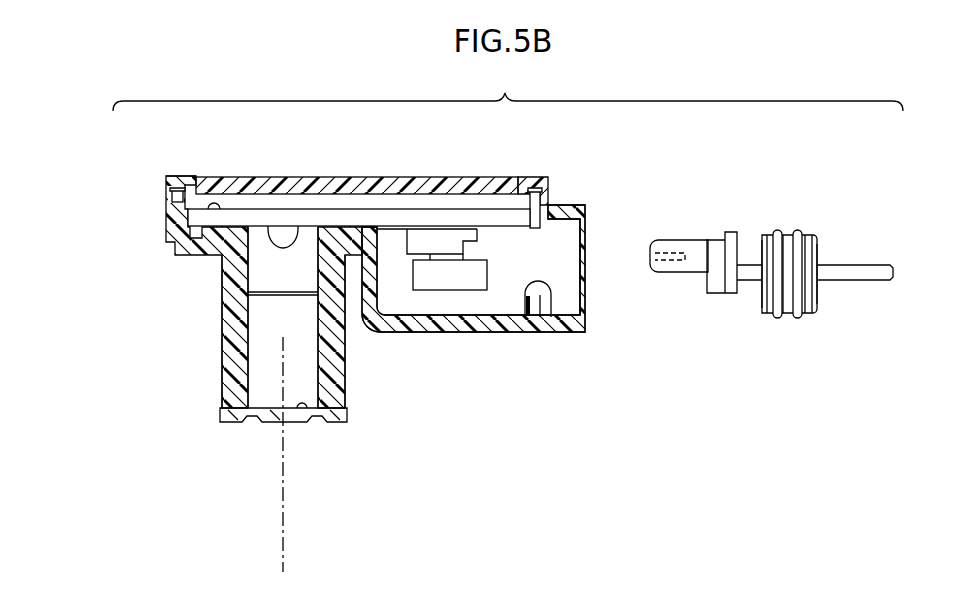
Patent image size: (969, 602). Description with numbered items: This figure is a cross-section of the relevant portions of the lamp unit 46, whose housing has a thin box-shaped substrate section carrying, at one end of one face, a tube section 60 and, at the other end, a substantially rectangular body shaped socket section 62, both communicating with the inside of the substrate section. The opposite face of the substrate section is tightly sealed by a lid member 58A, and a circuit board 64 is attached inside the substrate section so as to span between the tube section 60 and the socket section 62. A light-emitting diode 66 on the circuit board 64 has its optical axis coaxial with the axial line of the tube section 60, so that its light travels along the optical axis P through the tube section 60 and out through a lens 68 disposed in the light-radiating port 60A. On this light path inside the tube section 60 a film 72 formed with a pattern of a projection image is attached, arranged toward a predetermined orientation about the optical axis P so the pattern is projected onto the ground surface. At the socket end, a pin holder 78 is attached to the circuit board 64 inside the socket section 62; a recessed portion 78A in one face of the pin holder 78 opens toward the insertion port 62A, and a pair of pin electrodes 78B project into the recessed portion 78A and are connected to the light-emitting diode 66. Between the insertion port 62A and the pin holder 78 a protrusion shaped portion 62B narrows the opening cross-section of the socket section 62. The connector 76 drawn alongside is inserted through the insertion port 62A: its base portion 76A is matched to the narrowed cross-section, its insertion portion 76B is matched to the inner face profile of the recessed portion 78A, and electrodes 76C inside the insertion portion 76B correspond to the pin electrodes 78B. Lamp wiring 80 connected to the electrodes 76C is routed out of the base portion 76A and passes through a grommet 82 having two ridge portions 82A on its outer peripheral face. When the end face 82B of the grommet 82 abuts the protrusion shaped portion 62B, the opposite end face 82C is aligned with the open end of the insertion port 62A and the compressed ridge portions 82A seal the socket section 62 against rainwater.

The lamp unit 46 is at (437, 440).
The lid member 58A is at (396, 178).
The tube section 60 is at (222, 351).
The light-radiating port 60A is at (297, 418).
The socket section 62 is at (445, 333).
The insertion port 62A is at (585, 314).
The protrusion shaped portion 62B is at (553, 320).
The circuit board 64 is at (166, 230).
The light-emitting diode (LED) 66 is at (277, 238).
The lens 68 is at (345, 415).
The film 72 is at (270, 296).
The connector 76 is at (768, 214).
The base portion 76A is at (727, 293).
The insertion portion 76B is at (677, 240).
The electrodes 76C is at (672, 262).
The pin holder 78 is at (490, 277).
The recessed portion 78A is at (478, 258).
The pin electrodes 78B is at (440, 257).
The lamp wiring 80 is at (860, 281).
The grommet 82 is at (808, 238).
The ridge portions 82A is at (797, 318).
The end face 82B is at (763, 245).
The end face 82C is at (818, 248).
The optical axis P is at (283, 518).